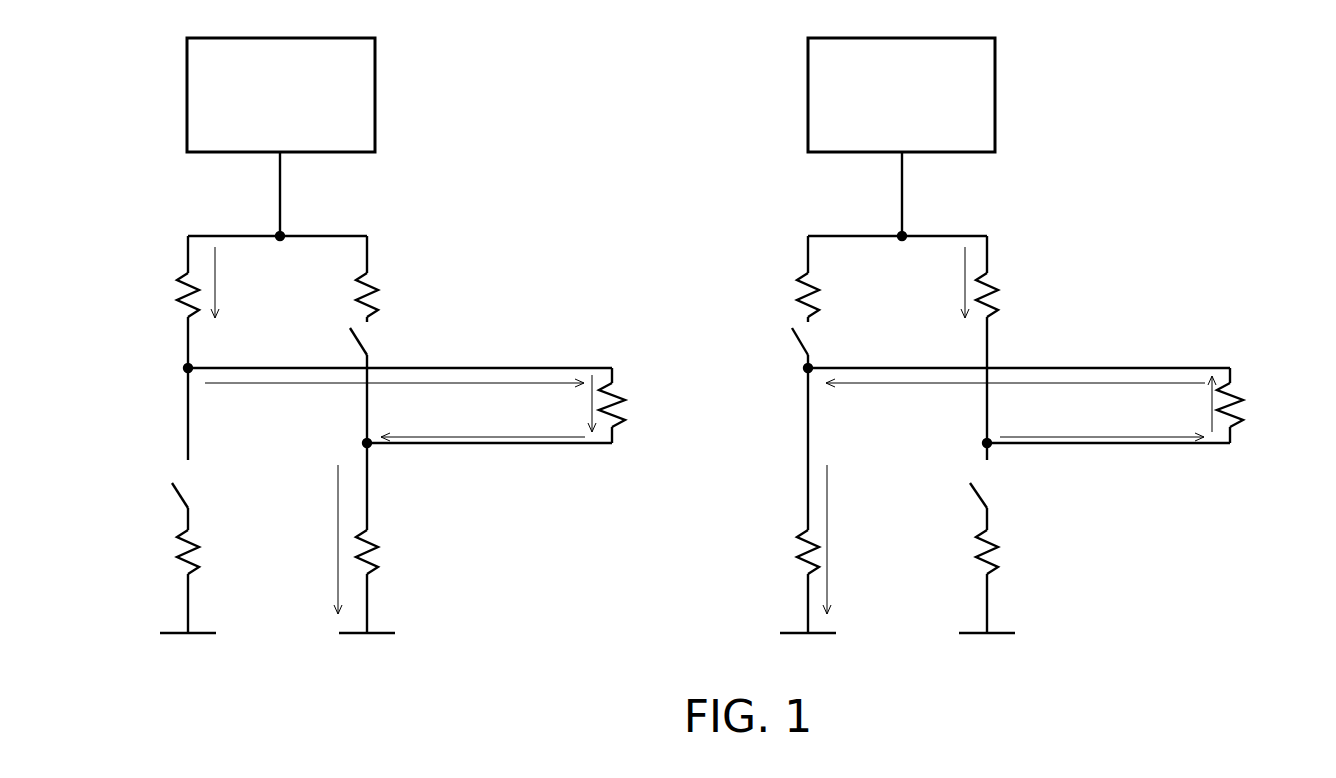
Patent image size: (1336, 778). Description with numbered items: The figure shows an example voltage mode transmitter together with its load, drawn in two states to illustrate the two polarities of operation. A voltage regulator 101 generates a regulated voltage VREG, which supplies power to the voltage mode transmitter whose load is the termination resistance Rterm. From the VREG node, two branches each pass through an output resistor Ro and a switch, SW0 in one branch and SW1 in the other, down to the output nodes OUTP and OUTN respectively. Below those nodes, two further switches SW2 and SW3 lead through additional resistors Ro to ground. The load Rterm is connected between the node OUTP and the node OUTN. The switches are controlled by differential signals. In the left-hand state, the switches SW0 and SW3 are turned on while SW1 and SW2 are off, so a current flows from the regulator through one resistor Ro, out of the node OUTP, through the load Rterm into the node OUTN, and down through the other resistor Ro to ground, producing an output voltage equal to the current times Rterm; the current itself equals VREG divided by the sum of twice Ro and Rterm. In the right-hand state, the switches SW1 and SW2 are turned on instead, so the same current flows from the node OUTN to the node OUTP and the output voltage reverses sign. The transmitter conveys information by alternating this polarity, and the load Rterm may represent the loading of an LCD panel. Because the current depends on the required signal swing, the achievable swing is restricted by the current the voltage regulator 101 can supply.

The voltage regulator 101 is at (375, 92).
The regulated voltage VREG is at (587, 196).
The output resistor Ro is at (593, 434).
The switch SW0 is at (463, 342).
The switch SW1 is at (635, 342).
The switch SW2 is at (465, 438).
The switch SW3 is at (630, 475).
The node OUTP is at (679, 376).
The node OUTN is at (768, 412).
The load Rterm is at (949, 405).